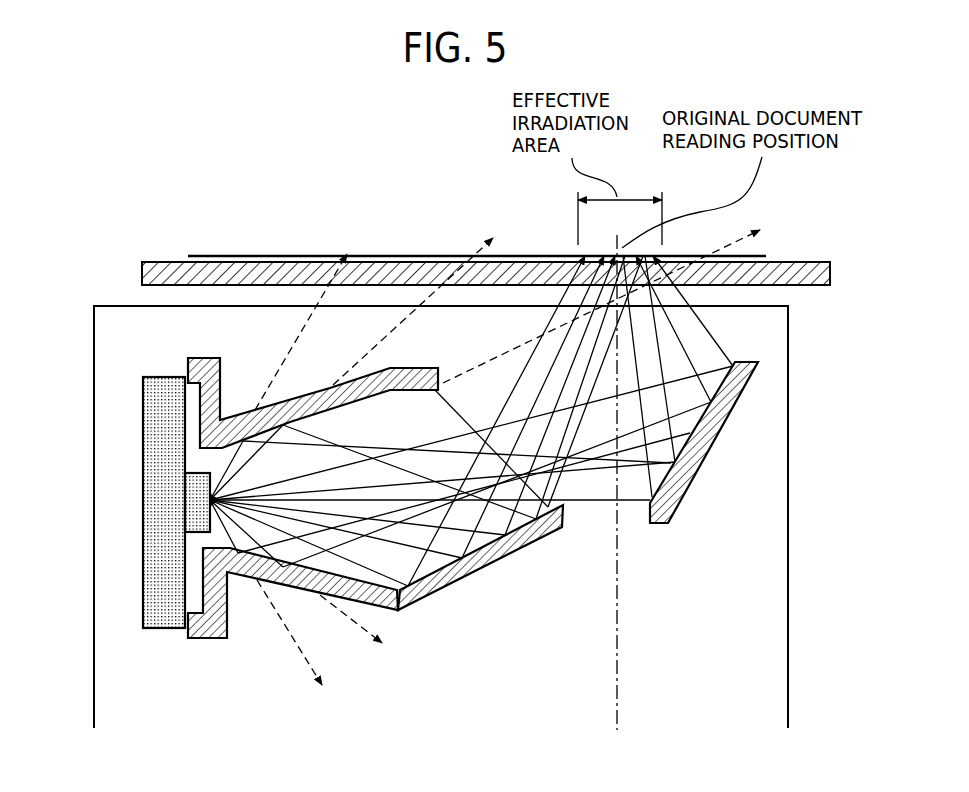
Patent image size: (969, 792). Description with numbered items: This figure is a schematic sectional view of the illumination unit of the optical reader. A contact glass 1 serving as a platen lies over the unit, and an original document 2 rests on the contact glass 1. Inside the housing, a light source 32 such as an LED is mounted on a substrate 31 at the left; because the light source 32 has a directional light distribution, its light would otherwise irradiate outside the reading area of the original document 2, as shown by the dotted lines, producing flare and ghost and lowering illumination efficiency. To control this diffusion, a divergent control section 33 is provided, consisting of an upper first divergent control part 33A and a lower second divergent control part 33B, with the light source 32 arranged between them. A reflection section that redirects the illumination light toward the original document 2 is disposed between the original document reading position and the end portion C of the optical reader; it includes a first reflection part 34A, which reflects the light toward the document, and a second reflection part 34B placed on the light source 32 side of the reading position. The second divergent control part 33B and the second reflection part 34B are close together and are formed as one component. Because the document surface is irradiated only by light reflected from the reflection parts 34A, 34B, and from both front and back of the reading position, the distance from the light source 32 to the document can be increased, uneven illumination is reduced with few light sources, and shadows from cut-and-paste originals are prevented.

The contact glass 1 is at (172, 266).
The original document 2 is at (398, 256).
The substrate 31 is at (157, 520).
The light source 32 is at (192, 487).
The divergent control section 33 is at (347, 430).
The first divergent control part 33A is at (410, 368).
The second divergent control part 33B is at (382, 600).
The first reflection part 34A is at (717, 442).
The second reflection part 34B is at (508, 538).
The end portion of the optical reader C is at (788, 392).